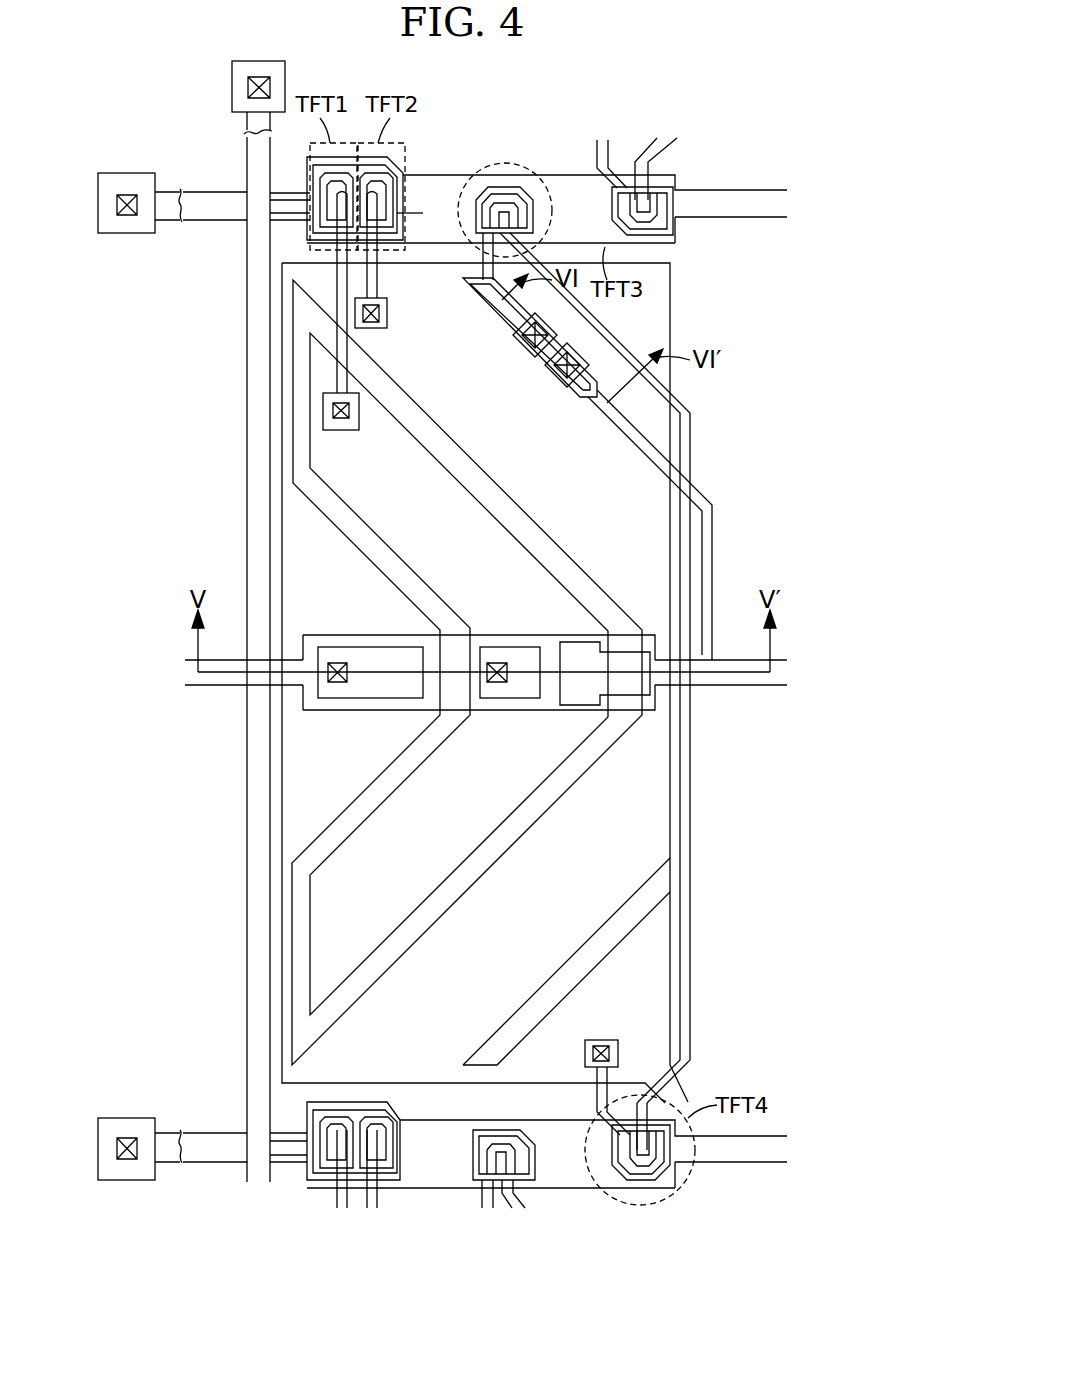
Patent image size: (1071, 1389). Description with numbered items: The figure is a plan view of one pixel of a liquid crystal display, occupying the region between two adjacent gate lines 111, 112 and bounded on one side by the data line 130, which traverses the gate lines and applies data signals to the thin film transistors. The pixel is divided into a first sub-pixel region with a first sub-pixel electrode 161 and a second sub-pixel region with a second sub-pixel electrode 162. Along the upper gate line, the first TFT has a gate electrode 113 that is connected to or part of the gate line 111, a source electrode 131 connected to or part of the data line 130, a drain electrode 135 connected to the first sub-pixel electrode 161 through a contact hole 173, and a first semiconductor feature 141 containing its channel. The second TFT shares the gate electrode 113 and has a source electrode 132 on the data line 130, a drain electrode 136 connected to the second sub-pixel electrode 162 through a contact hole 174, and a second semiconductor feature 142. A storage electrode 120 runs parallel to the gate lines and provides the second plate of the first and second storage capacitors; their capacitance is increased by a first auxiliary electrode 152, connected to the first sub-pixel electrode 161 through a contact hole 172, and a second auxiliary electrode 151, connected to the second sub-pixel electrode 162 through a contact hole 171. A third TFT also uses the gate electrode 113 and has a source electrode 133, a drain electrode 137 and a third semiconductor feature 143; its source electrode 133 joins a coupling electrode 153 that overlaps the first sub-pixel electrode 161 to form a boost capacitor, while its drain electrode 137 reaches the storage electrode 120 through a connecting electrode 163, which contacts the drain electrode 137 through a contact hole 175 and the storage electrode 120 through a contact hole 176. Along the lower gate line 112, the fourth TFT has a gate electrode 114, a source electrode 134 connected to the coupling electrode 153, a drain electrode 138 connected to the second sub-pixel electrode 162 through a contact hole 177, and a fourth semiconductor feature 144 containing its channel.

The gate line 111 is at (208, 207).
The gate line 112 is at (215, 1150).
The gate electrode 113 is at (440, 175).
The gate electrode 114 is at (568, 1190).
The storage electrode 120 is at (213, 680).
The data line 130 is at (248, 150).
The source electrode 131 is at (340, 180).
The source electrode 132 is at (382, 173).
The source electrode 133 is at (548, 225).
The source electrode 134 is at (673, 1077).
The drain electrode 135 is at (340, 275).
The drain electrode 136 is at (367, 285).
The drain electrode 137 is at (488, 187).
The drain electrode 138 is at (640, 1168).
The first semiconductor feature 141 is at (310, 227).
The second semiconductor feature 142 is at (423, 213).
The third semiconductor feature 143 is at (502, 185).
The fourth semiconductor feature 144 is at (665, 1175).
The second auxiliary electrode 151 is at (360, 647).
The first auxiliary electrode 152 is at (493, 647).
The coupling electrode 153 is at (567, 643).
The first sub-pixel electrode 161 is at (402, 523).
The second sub-pixel electrode 162 is at (547, 488).
The connecting electrode 163 is at (600, 370).
The contact hole 171 is at (340, 682).
The contact hole 172 is at (497, 682).
The contact hole 173 is at (342, 430).
The contact hole 174 is at (387, 318).
The contact hole 175 is at (520, 345).
The contact hole 176 is at (552, 380).
The contact hole 177 is at (604, 1040).